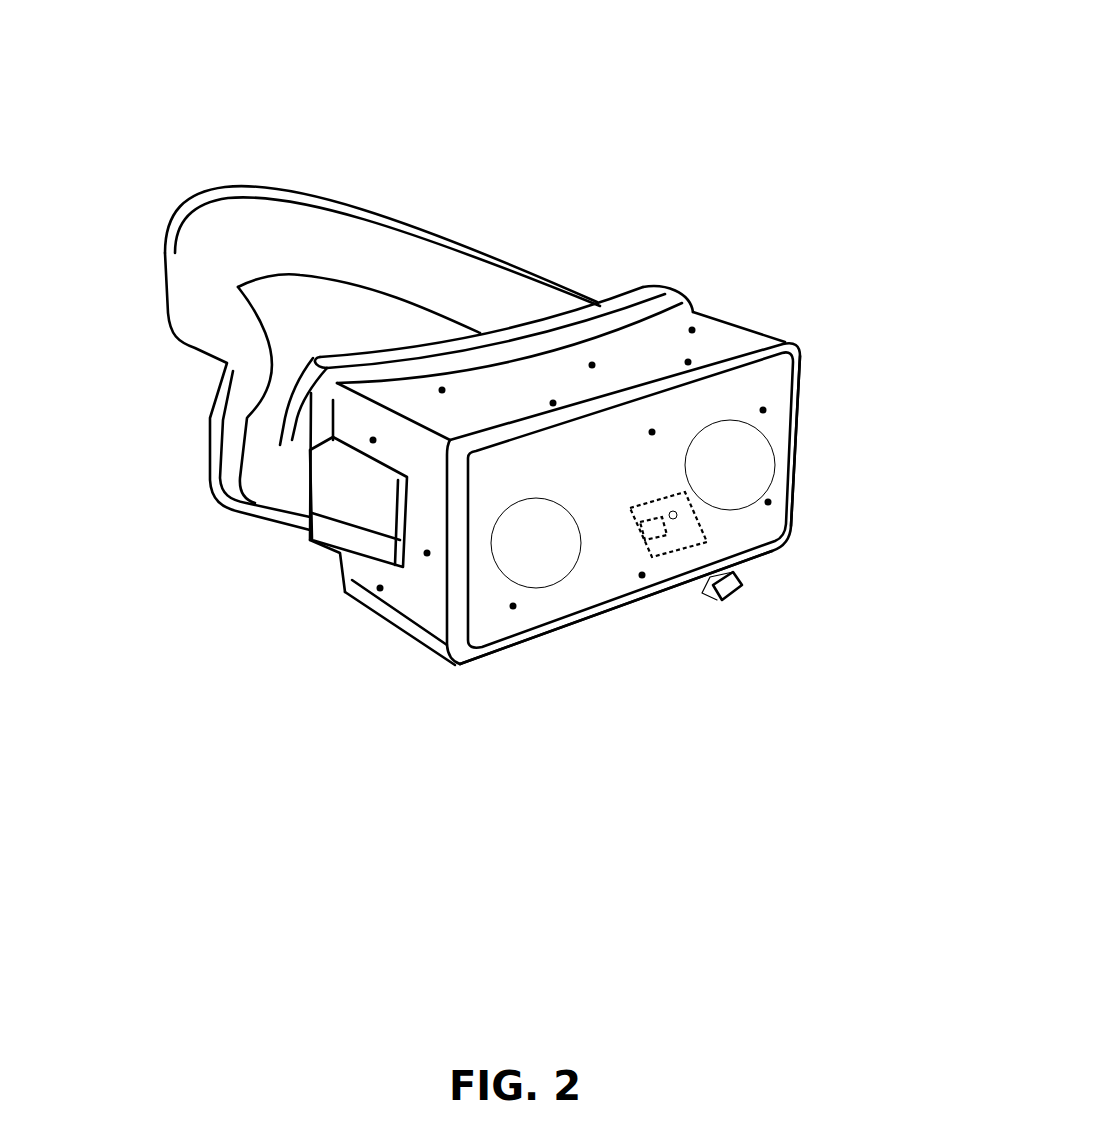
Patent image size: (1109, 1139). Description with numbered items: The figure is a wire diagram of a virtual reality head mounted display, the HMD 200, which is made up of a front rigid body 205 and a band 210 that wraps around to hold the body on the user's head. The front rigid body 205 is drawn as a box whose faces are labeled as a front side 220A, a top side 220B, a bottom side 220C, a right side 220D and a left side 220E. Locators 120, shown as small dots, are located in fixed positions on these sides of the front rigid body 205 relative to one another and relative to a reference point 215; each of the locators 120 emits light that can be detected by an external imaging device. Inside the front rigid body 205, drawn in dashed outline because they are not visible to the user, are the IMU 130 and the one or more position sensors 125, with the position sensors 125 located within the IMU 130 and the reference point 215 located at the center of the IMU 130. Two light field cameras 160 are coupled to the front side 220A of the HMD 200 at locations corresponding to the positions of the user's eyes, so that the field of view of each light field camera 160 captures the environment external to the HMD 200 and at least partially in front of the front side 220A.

The HMD 200 is at (510, 33).
The band 210 is at (518, 267).
The front rigid body 205 is at (805, 367).
The front side 220A is at (588, 587).
The top side 220B is at (417, 390).
The bottom side 220C is at (357, 607).
The right side 220D is at (420, 587).
The left side 220E is at (747, 323).
The light field camera 160 is at (947, 556).
The locators 120 is at (770, 407).
The IMU 130 is at (707, 518).
The position sensors 125 is at (653, 530).
The reference point 215 is at (675, 525).